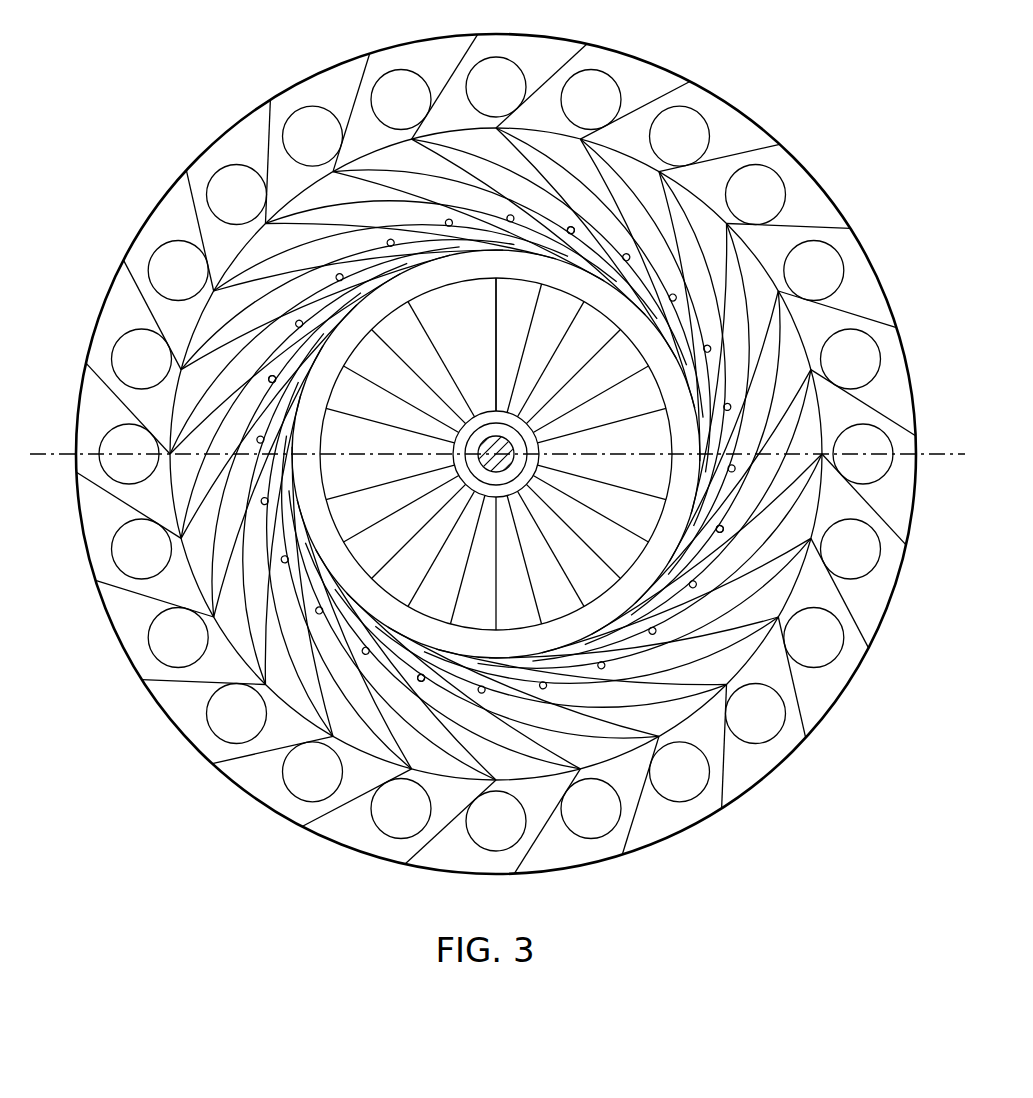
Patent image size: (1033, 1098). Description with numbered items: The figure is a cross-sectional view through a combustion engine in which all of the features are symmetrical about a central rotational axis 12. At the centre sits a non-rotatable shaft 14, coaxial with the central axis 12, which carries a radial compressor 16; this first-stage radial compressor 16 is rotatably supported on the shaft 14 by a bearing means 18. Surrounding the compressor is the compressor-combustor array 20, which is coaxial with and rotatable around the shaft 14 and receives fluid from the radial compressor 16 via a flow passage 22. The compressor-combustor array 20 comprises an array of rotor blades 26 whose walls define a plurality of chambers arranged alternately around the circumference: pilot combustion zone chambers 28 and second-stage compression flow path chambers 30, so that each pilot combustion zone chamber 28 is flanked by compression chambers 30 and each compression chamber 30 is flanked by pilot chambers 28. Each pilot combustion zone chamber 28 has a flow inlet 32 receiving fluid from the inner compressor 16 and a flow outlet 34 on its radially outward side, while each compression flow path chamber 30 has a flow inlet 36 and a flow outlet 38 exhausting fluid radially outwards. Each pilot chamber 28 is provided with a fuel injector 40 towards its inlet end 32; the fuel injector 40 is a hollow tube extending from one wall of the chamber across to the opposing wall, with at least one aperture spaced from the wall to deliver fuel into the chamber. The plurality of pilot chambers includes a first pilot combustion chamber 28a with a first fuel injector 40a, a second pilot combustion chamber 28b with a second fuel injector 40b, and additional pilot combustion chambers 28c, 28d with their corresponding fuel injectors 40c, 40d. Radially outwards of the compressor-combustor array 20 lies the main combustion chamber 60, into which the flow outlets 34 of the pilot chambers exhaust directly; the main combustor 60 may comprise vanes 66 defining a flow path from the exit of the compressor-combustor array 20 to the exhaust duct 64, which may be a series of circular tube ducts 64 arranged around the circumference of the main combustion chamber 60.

The central rotational axis 12 is at (64, 452).
The shaft 14 is at (470, 422).
The radial compressor 16 is at (496, 454).
The bearing means 18 is at (494, 424).
The compressor-combustor array 20 is at (479, 455).
The flow passage 22 is at (328, 363).
The rotor blades 26 is at (440, 186).
The pilot combustion zone chamber 28 is at (643, 197).
The first pilot combustion chamber 28a is at (171, 480).
The second pilot combustion chamber 28b is at (773, 489).
The additional pilot combustion chamber 28c is at (473, 159).
The additional pilot combustion chamber 28d is at (480, 770).
The compression flow path chamber 30 is at (541, 254).
The flow inlet 32 is at (497, 454).
The flow outlet 34 is at (386, 166).
The flow inlet 36 is at (382, 429).
The flow outlet 38 is at (821, 380).
The fuel injector 40 is at (390, 239).
The first fuel injector 40a is at (270, 382).
The second fuel injector 40b is at (722, 527).
The fuel injector 40c is at (568, 227).
The fuel injector 40d is at (424, 681).
The main combustion chamber 60 is at (122, 297).
The exhaust duct 64 is at (851, 452).
The vanes 66 is at (372, 61).